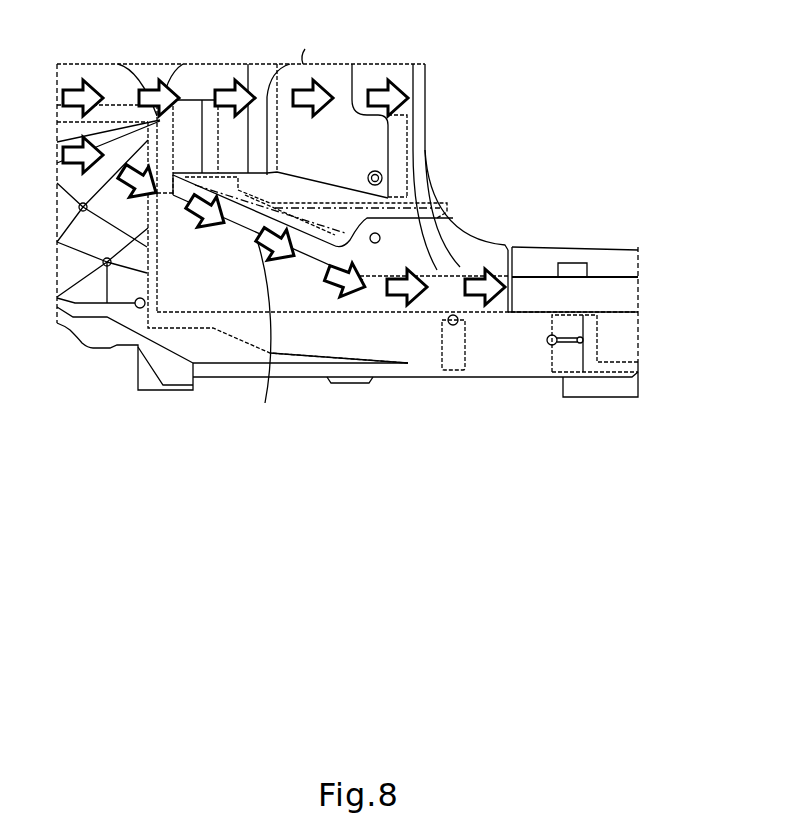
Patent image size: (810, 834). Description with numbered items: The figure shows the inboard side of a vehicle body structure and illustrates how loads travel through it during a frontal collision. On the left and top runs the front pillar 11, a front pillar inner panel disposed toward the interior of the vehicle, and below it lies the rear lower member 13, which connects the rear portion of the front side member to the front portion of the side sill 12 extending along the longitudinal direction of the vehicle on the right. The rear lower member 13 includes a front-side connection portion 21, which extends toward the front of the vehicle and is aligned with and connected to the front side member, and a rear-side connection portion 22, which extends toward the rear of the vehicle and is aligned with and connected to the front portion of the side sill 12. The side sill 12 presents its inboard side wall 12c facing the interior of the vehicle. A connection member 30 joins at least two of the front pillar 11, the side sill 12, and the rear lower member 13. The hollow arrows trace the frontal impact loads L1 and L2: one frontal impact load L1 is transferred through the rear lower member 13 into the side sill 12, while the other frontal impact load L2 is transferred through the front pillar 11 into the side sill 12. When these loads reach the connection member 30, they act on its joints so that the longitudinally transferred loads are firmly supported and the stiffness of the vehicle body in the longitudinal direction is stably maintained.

The front pillar 11 is at (377, 63).
The side sill 12 is at (604, 222).
The inboard side wall 12c is at (628, 293).
The rear lower member 13 is at (445, 425).
The front-side connection portion 21 is at (318, 394).
The rear-side connection portion 22 is at (549, 390).
The connection member 30 is at (347, 218).
The frontal impact load L1 is at (266, 336).
The frontal impact load L2 is at (301, 45).